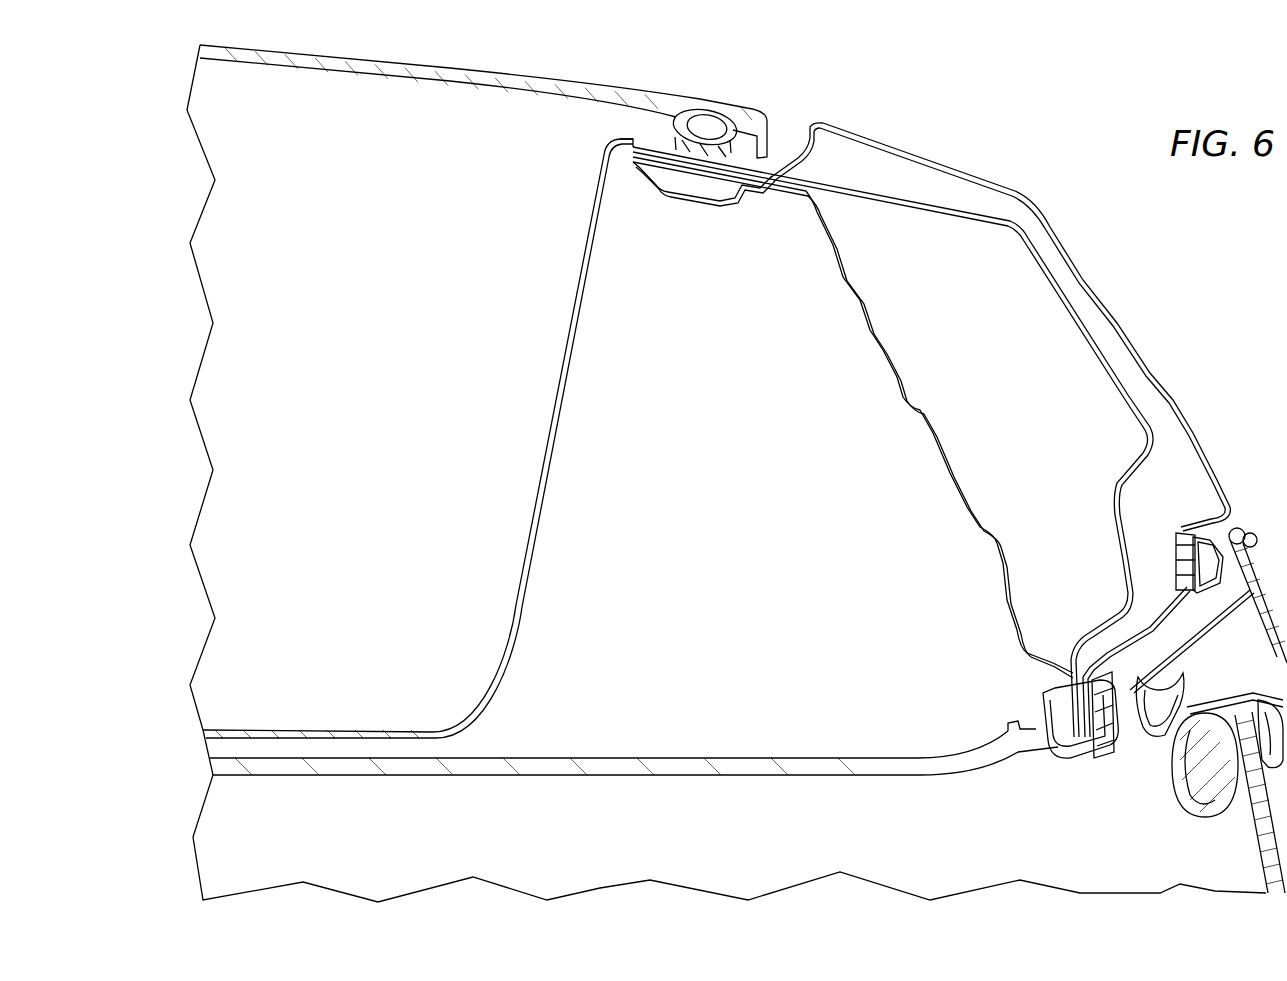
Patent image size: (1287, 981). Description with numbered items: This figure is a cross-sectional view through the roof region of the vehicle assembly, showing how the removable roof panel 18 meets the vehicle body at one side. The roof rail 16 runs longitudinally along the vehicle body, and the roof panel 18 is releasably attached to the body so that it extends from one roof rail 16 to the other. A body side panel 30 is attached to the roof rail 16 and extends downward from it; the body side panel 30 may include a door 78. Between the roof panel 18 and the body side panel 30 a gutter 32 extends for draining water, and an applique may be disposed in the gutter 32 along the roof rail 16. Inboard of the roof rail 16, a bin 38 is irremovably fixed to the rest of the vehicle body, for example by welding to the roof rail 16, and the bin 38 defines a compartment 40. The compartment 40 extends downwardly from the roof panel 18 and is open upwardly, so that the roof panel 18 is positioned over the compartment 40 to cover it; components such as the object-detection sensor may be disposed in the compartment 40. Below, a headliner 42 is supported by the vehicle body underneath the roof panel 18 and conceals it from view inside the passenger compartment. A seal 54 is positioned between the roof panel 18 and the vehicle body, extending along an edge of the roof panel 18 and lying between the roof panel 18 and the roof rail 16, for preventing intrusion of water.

The roof rail 16 is at (688, 201).
The roof panel 18 is at (721, 106).
The body side panel 30 is at (1084, 258).
The gutter 32 is at (800, 117).
The bin 38 is at (567, 333).
The compartment 40 is at (232, 357).
The headliner 42 is at (688, 776).
The seal 54 is at (678, 117).
The door 78 is at (1109, 794).